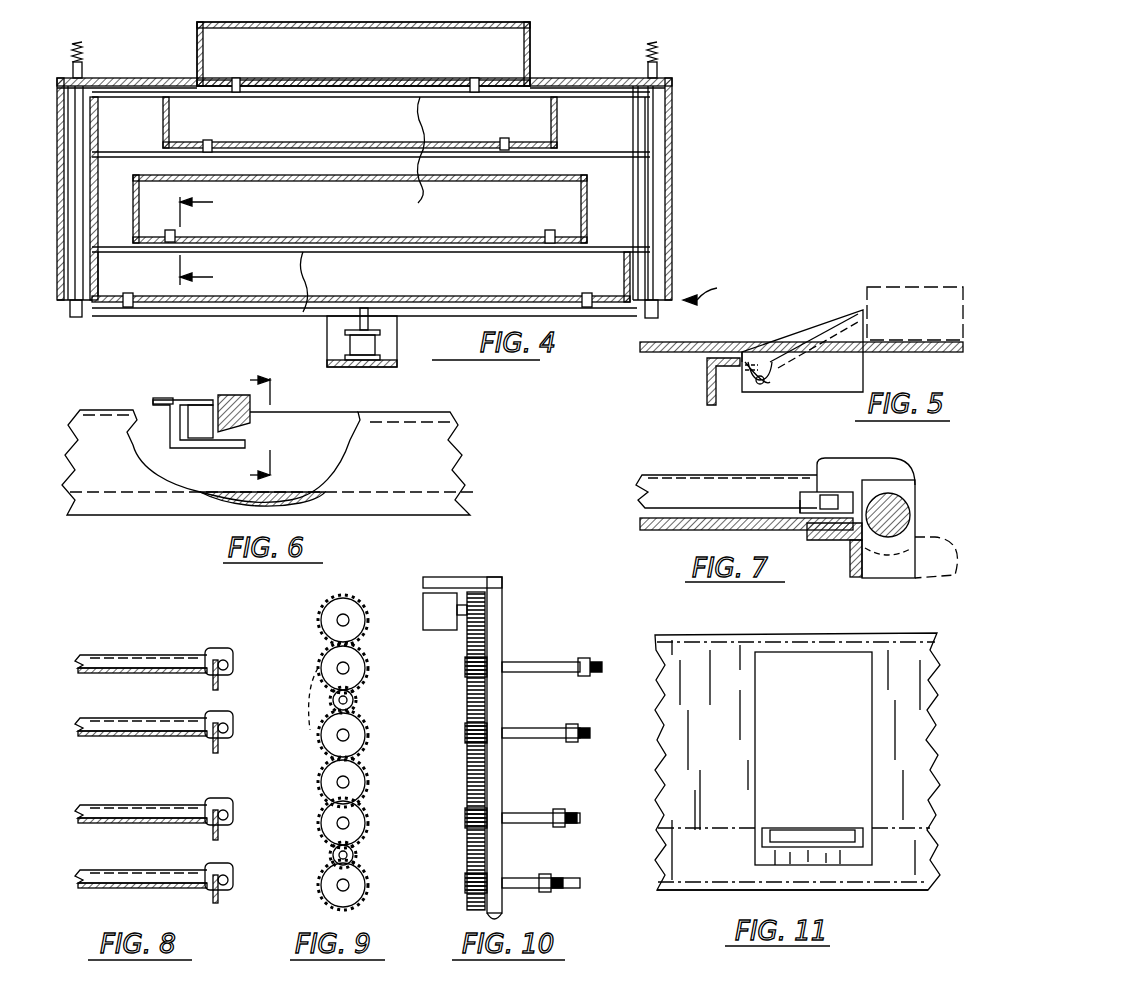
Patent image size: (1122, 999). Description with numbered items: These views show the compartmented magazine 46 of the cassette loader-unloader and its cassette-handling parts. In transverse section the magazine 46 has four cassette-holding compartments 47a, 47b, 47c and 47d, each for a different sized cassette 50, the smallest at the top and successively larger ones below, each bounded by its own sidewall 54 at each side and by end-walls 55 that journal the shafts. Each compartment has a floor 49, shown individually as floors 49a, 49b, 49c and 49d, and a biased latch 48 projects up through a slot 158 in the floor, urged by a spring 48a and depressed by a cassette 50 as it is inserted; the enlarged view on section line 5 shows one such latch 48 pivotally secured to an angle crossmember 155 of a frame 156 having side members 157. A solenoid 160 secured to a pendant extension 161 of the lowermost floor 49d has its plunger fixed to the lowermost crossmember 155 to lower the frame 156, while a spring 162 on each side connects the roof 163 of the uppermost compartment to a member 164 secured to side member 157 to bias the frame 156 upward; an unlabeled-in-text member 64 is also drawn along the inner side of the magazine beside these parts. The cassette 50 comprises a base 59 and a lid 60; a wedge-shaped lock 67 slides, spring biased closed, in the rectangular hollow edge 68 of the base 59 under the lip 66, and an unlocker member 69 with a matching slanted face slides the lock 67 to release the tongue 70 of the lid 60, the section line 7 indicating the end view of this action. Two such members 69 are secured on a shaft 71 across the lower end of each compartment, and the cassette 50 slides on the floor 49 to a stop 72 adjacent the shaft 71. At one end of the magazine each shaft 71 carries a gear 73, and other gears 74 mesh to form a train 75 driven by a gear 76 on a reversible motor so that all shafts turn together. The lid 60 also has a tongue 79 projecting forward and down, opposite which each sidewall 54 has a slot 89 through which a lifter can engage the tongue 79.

In FIG. 4, the section line 5— 5 is at (196, 241).
In FIG. 6, the section line 7— 7 is at (269, 429).
In FIG. 4, the compartmented magazine 46 is at (709, 288).
In FIG. 4, the cassette-holding compartment 47a is at (363, 54).
In FIG. 4, the cassette-holding compartment 47b is at (272, 122).
In FIG. 4, the cassette-holding compartment 47c is at (360, 209).
In FIG. 4, the cassette-holding compartment 47d is at (239, 274).
In FIG. 4, the biased latch 48 is at (207, 140).
In FIG. 5, the biased latch 48 is at (802, 351).
In FIG. 5, the spring 48a is at (735, 375).
In FIG. 5, the compartment floor 49 is at (705, 342).
In FIG. 7, the compartment floor 49 is at (680, 530).
In FIG. 8, the compartment floor 49 is at (108, 675).
In FIG. 11, the compartment floor 49 is at (860, 890).
In FIG. 4, the compartment floor 49a is at (295, 80).
In FIG. 4, the compartment floor 49b is at (310, 142).
In FIG. 4, the compartment floor 49c is at (298, 237).
In FIG. 4, the compartment floor 49d is at (290, 296).
In FIG. 5, the cassette 50 is at (902, 287).
In FIG. 7, the cassette 50 is at (683, 475).
In FIG. 8, the cassette 50 is at (165, 655).
In FIG. 11, the cassette 50 is at (843, 828).
In FIG. 4, the compartment sidewall 54 is at (530, 45).
In FIG. 11, the compartment sidewall 54 is at (797, 761).
In FIG. 4, the magazine end-wall 55 is at (672, 228).
In FIG. 10, the magazine end-wall 55 is at (502, 596).
In FIG. 6, the base 59 is at (310, 480).
In FIG. 6, the lid 60 is at (162, 398).
In FIG. 4, the guide rail 64 is at (80, 122).
In FIG. 6, the lip 66 is at (455, 410).
In FIG. 6, the lock 67 is at (318, 420).
In FIG. 7, the lock 67 is at (825, 498).
In FIG. 6, the rectangular hollow edge 68 is at (462, 470).
In FIG. 6, the unlocker member 69 is at (238, 395).
In FIG. 7, the unlocker member 69 is at (855, 470).
In FIG. 8, the unlocker member 69 is at (220, 648).
In FIG. 10, the unlocker member 69 is at (580, 658).
In FIG. 6, the tongue 70 is at (200, 400).
In FIG. 7, the shaft 71 is at (915, 500).
In FIG. 8, the shaft 71 is at (230, 665).
In FIG. 9, the shaft 71 is at (365, 698).
In FIG. 10, the shaft 71 is at (545, 662).
In FIG. 7, the stop 72 is at (893, 500).
In FIG. 9, the gear 73 is at (365, 670).
In FIG. 10, the gear 73 is at (465, 665).
In FIG. 9, the gear 74 is at (318, 725).
In FIG. 10, the gear train 75 is at (502, 915).
In FIG. 9, the drive gear 76 is at (350, 600).
In FIG. 10, the drive gear 76 is at (476, 592).
In FIG. 11, the tongue 79 is at (798, 828).
In FIG. 11, the slot 89 is at (768, 695).
In FIG. 4, the angle crossmember 155 is at (418, 203).
In FIG. 5, the angle crossmember 155 is at (707, 390).
In FIG. 7, the angle crossmember 155 is at (856, 577).
In FIG. 8, the angle crossmember 155 is at (215, 898).
In FIG. 4, the frame 156 is at (80, 320).
In FIG. 4, the side member 157 is at (98, 165).
In FIG. 5, the slot 158 is at (790, 340).
In FIG. 4, the solenoid 160 is at (350, 345).
In FIG. 4, the pendant extension 161 is at (385, 367).
In FIG. 4, the spring 162 is at (85, 58).
In FIG. 4, the roof 163 is at (605, 78).
In FIG. 4, the member 164 is at (672, 172).